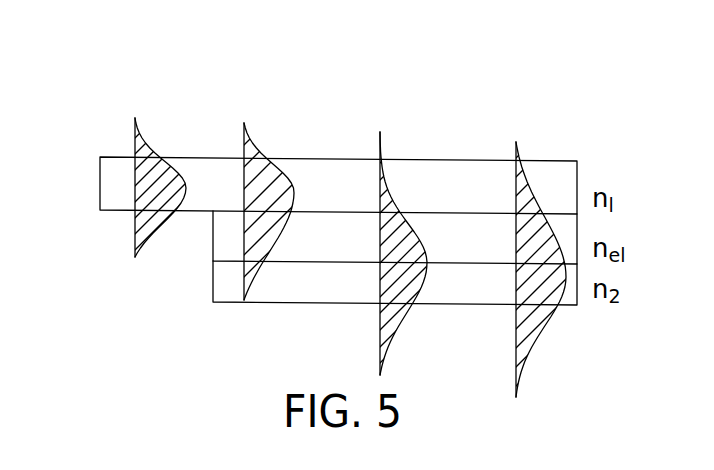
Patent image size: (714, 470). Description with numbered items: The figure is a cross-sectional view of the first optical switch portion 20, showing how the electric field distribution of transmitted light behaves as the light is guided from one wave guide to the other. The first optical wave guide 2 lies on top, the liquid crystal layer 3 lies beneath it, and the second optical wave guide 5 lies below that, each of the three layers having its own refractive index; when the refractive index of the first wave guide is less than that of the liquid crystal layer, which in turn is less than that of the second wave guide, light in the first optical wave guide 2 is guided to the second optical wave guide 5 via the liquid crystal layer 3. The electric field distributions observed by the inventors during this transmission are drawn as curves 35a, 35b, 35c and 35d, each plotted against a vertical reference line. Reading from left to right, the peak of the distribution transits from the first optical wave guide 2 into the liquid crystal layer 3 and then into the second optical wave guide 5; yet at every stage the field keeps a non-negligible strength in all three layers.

The first optical wave guide 2 is at (110, 189).
The liquid crystal layer 3 is at (213, 233).
The second optical wave guide 5 is at (217, 282).
The first optical switch portion 20 is at (318, 173).
The curve 35a is at (142, 150).
The curve 35b is at (285, 168).
The curve 35c is at (399, 178).
The curve 35d is at (539, 183).